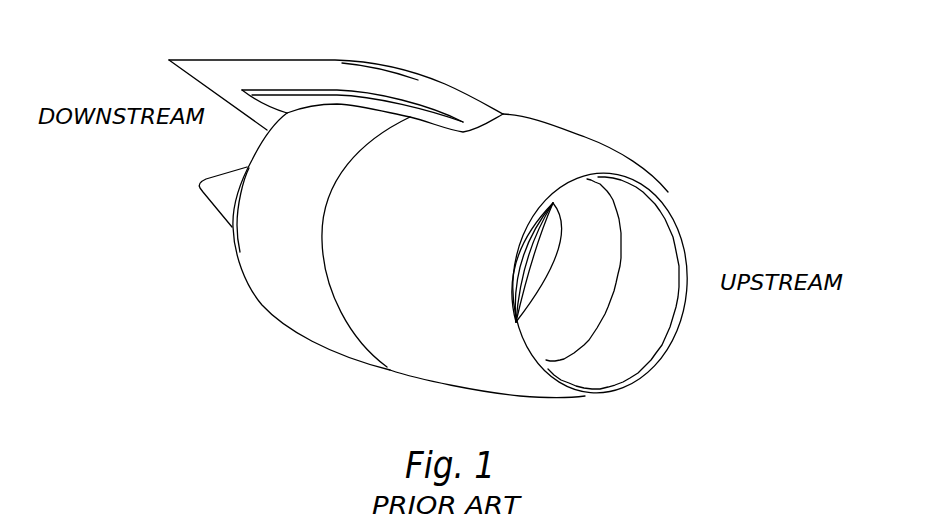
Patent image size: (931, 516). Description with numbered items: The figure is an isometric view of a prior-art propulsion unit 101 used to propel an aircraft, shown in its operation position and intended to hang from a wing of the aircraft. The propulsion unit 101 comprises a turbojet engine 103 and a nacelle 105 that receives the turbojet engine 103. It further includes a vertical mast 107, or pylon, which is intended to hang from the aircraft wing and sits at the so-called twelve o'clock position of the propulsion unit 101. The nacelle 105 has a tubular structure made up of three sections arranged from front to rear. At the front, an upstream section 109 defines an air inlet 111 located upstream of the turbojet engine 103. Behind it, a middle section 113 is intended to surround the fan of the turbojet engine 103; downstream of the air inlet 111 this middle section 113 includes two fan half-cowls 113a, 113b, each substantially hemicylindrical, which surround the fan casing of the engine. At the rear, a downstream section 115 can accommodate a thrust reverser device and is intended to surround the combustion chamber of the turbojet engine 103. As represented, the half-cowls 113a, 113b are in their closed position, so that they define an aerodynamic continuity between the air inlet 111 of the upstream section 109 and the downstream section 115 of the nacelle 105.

The propulsion unit 101 is at (678, 57).
The turbojet engine 103 is at (222, 192).
The nacelle 105 is at (524, 100).
The vertical mast 107 is at (217, 60).
The upstream section 109 is at (624, 162).
The air inlet 111 is at (686, 212).
The middle section 113 is at (386, 318).
The fan half-cowl 113a is at (582, 135).
The fan half-cowl 113b is at (447, 333).
The downstream section 115 is at (322, 320).